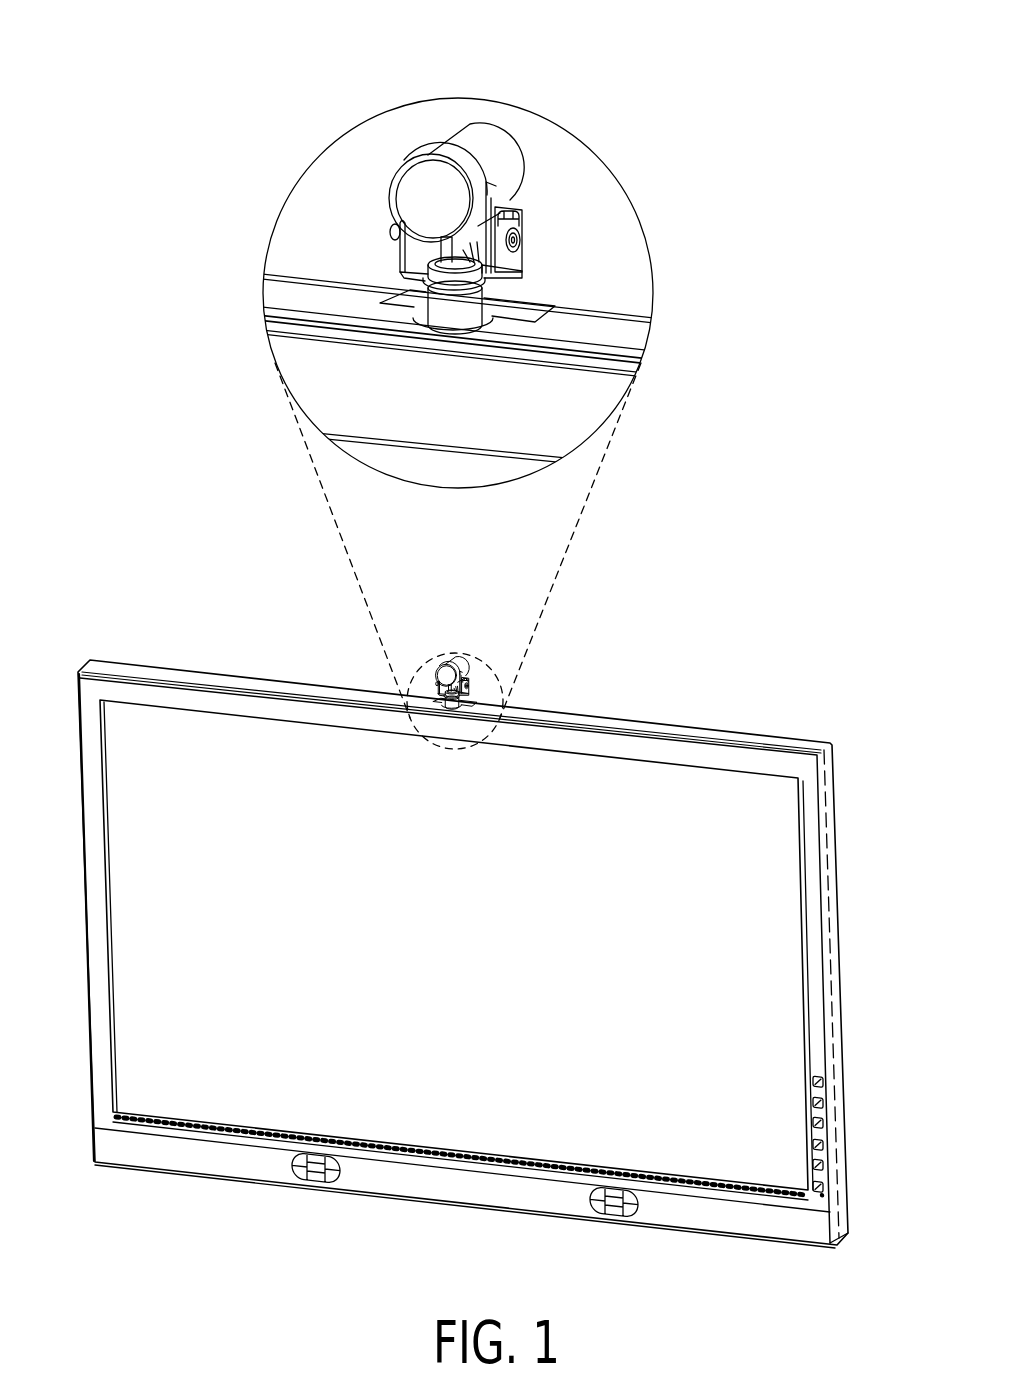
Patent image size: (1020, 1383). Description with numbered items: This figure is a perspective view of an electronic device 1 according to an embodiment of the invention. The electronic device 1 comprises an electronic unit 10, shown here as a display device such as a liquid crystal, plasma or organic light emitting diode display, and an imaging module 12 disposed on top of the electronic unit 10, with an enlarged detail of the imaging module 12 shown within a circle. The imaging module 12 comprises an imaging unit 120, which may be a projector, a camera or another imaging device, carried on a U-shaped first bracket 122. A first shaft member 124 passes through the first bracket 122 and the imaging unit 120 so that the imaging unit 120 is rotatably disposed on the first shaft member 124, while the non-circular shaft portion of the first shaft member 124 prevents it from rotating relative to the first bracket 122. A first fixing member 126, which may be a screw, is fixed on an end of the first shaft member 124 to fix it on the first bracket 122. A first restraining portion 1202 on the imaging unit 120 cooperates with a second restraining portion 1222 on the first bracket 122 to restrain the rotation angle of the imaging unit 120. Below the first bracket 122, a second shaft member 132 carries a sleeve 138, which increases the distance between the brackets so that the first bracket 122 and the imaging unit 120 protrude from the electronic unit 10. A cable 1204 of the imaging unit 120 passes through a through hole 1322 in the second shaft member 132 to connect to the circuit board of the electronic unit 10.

The electronic device 1 is at (796, 60).
The electronic unit 10 is at (737, 732).
The imaging module 12 is at (504, 654).
The imaging unit 120 is at (395, 172).
The first bracket 122 is at (399, 247).
The first shaft member 124 is at (515, 238).
The first fixing member 126 is at (393, 230).
The second shaft member 132 is at (400, 268).
The sleeve 138 is at (475, 300).
The first restraining portion 1202 is at (523, 203).
The cable 1204 is at (493, 287).
The second restraining portion 1222 is at (523, 217).
The through hole 1322 is at (507, 212).